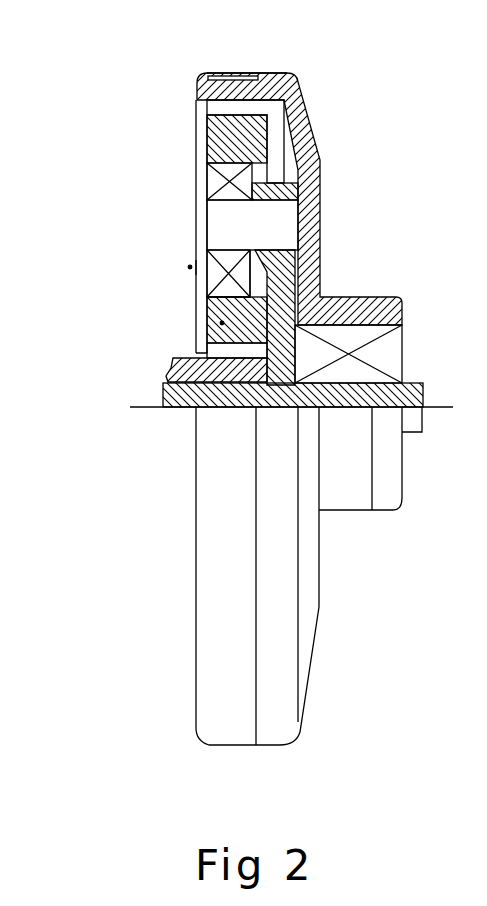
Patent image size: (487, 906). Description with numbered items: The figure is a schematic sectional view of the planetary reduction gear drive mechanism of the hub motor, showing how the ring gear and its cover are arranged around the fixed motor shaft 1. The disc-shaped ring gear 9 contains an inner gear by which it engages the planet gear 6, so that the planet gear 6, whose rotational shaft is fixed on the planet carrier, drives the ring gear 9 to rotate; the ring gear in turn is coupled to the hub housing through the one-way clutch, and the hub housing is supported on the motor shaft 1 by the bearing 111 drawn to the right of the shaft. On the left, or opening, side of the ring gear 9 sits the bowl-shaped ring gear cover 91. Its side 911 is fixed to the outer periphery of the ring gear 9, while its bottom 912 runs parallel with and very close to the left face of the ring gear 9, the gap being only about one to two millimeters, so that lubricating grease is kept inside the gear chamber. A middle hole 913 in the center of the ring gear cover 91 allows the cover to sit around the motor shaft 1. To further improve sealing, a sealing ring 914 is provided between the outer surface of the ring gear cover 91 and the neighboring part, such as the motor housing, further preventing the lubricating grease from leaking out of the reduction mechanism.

The motor shaft 1 is at (388, 405).
The bearing 111 is at (347, 340).
The planet gear 6 is at (222, 323).
The ring gear 9 is at (313, 137).
The ring gear cover 91 is at (195, 163).
The side 911 is at (227, 75).
The bottom 912 is at (197, 120).
The middle hole 913 is at (190, 267).
The sealing ring 914 is at (193, 352).